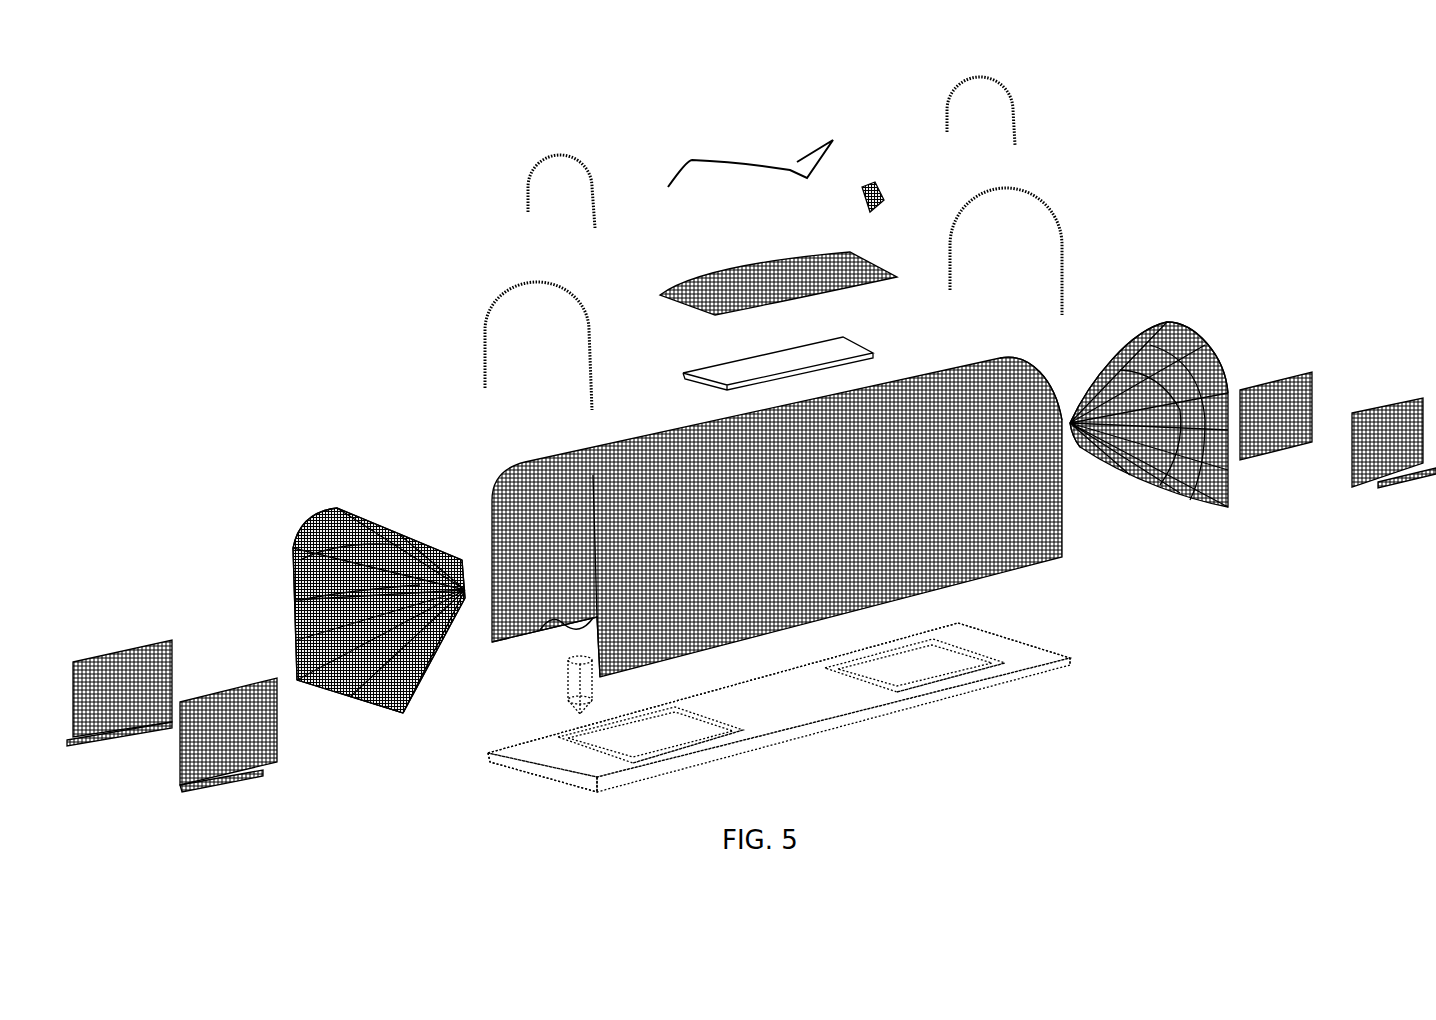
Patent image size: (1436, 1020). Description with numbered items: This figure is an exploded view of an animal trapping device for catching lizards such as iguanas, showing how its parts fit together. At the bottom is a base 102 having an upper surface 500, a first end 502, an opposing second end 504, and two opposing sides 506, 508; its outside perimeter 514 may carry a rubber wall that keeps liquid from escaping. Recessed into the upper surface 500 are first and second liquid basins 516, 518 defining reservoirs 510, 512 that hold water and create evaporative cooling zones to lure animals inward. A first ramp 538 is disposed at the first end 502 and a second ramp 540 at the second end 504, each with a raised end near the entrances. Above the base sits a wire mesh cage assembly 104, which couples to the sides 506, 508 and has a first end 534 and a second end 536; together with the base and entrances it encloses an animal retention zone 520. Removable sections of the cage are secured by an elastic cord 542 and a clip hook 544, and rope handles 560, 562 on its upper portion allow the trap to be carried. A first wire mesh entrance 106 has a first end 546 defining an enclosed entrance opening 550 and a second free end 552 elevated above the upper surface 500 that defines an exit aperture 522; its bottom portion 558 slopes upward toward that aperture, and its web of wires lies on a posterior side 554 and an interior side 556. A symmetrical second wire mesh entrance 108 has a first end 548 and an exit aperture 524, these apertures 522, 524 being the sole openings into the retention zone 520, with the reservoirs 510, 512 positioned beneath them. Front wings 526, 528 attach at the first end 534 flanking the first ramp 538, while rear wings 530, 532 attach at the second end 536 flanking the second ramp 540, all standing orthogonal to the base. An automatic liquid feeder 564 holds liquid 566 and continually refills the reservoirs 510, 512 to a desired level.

The base 102 is at (1017, 653).
The wire mesh cage assembly 104 is at (495, 507).
The first wire mesh entrance 106 is at (333, 528).
The second wire mesh entrance 108 is at (1210, 508).
The upper surface 500 is at (798, 708).
The first end 502 is at (515, 770).
The second end 504 is at (995, 628).
The side 506 is at (975, 690).
The side 508 is at (532, 729).
The reservoir 510 is at (674, 754).
The reservoir 512 is at (936, 679).
The outside perimeter 514 is at (613, 778).
The first liquid basin 516 is at (718, 740).
The second liquid basin 518 is at (990, 665).
The animal retention zone 520 is at (558, 618).
The exit aperture 522 is at (447, 573).
The exit aperture 524 is at (1090, 440).
The front wing 526 is at (108, 665).
The front wing 528 is at (193, 712).
The rear wing 530 is at (1262, 385).
The rear wing 532 is at (1365, 415).
The first end of the wire mesh cage assembly 534 is at (490, 628).
The second end of the wire mesh cage assembly 536 is at (1035, 372).
The first ramp 538 is at (578, 778).
The second ramp 540 is at (1073, 658).
The elastic cord 542 is at (690, 162).
The clip hook 544 is at (862, 195).
The first end of the first wire mesh entrance 546 is at (287, 543).
The first end of the second wire mesh entrance 548 is at (1183, 320).
The enclosed entrance opening 550 is at (313, 623).
The second free end 552 is at (463, 563).
The posterior side 554 is at (413, 703).
The interior side 556 is at (383, 700).
The bottom portion 558 is at (350, 699).
The handle 560 is at (528, 182).
The handle 562 is at (1003, 108).
The automatic liquid feeder 564 is at (587, 685).
The liquid 566 is at (568, 690).